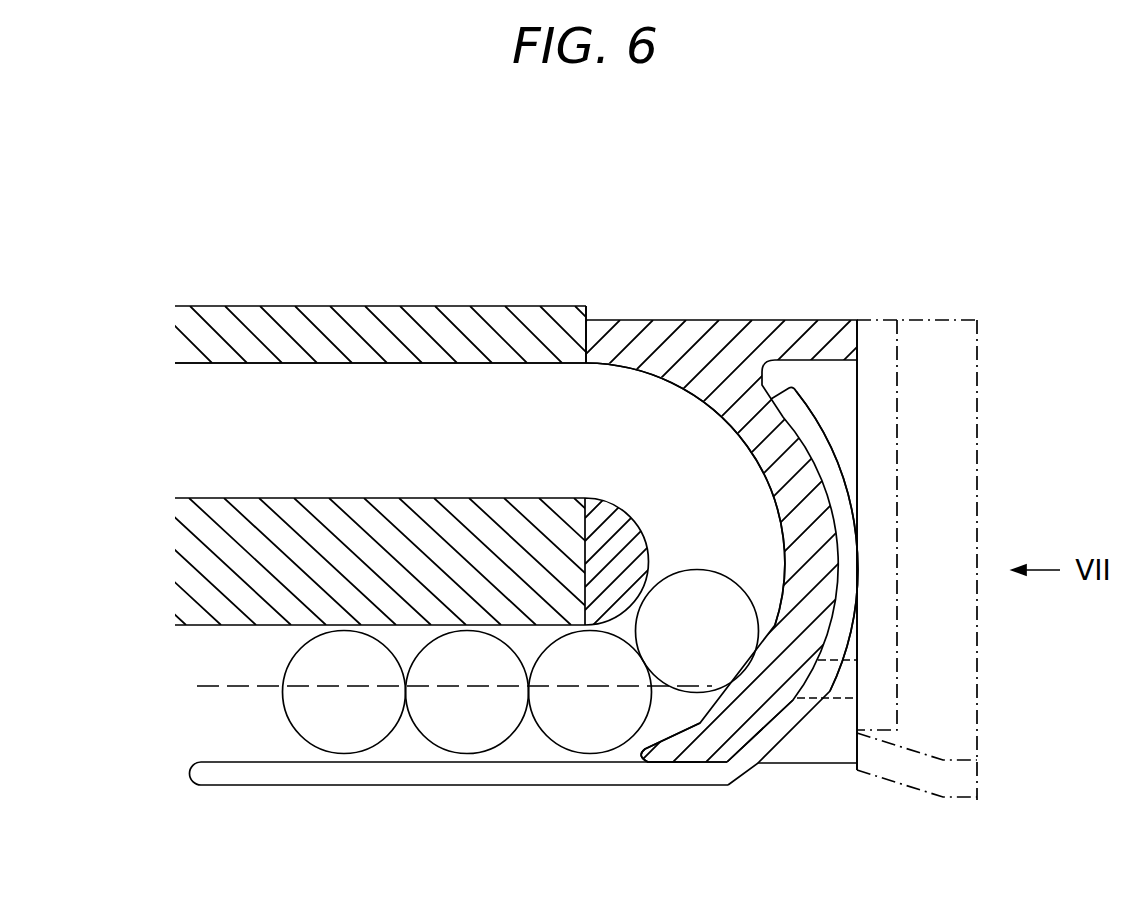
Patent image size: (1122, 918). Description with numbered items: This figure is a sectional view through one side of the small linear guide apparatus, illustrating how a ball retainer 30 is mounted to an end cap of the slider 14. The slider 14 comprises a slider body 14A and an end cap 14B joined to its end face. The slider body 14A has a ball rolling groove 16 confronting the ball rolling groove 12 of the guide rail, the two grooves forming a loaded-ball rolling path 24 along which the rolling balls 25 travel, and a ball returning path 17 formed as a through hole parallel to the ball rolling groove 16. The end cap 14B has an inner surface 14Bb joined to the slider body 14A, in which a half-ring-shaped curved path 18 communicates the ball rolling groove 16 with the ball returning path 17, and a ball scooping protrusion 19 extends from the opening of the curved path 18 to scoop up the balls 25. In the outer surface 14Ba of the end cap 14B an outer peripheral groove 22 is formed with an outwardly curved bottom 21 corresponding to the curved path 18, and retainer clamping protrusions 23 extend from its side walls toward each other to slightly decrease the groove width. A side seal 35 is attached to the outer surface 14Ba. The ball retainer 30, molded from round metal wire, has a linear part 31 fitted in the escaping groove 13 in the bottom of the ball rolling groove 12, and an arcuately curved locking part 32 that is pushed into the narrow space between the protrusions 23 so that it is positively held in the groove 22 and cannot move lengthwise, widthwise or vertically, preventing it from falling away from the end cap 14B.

The ball rolling groove 12 is at (210, 715).
The escaping groove 13 is at (753, 767).
The slider 14 is at (472, 298).
The slider body 14A is at (286, 328).
The end cap 14B is at (615, 348).
The outer surface 14Ba is at (862, 368).
The inner surface 14Bb is at (585, 335).
The ball rolling groove 16 is at (210, 650).
The ball returning path 17 is at (392, 387).
The curved path 18 is at (673, 418).
The ball scooping protrusion 19 is at (665, 748).
The outwardly curved bottom 21 is at (837, 512).
The outer peripheral groove 22 is at (837, 425).
The retainer clamping protrusion 23 is at (842, 677).
The loaded-ball rolling path 24 is at (156, 686).
The rolling ball 25 is at (336, 727).
The ball retainer 30 is at (232, 768).
The linear part 31 is at (417, 766).
The locking part 32 is at (797, 707).
The side seal 35 is at (958, 365).